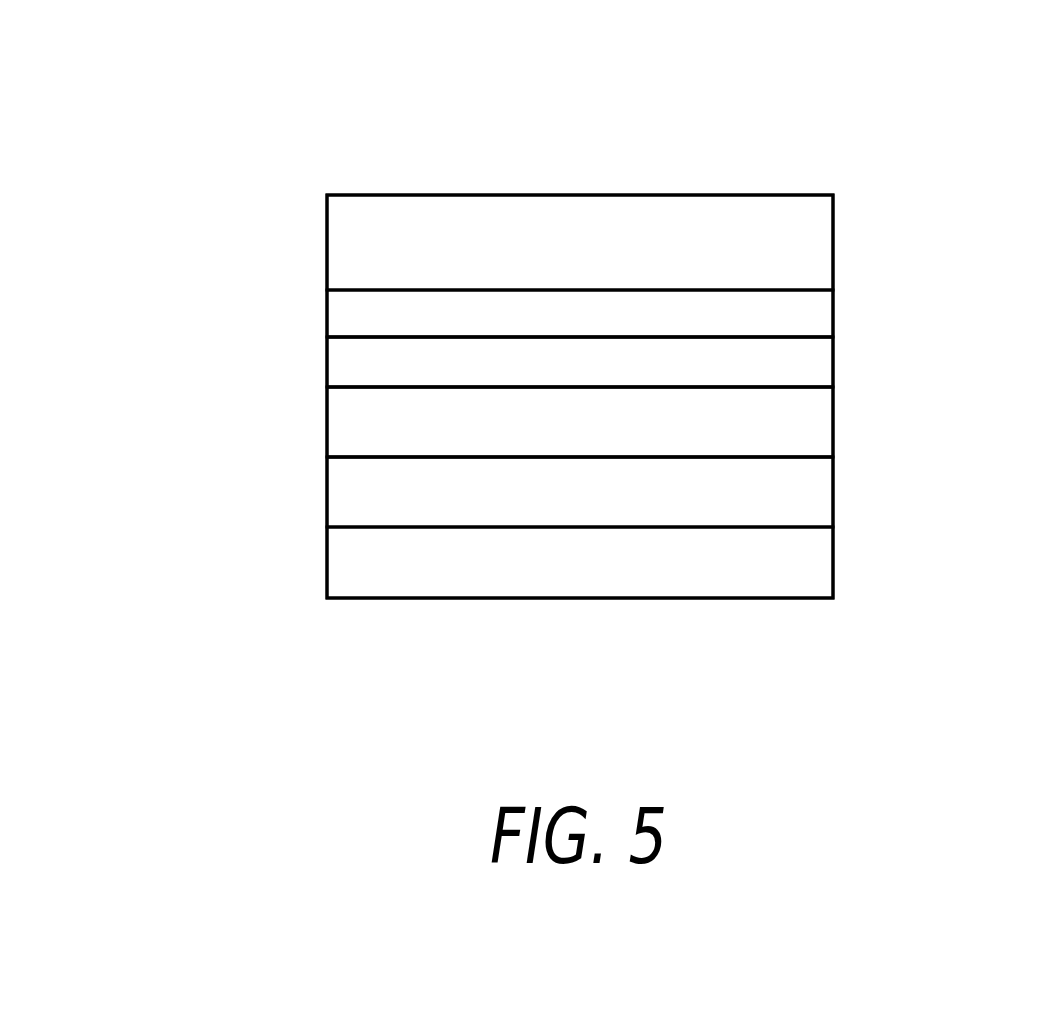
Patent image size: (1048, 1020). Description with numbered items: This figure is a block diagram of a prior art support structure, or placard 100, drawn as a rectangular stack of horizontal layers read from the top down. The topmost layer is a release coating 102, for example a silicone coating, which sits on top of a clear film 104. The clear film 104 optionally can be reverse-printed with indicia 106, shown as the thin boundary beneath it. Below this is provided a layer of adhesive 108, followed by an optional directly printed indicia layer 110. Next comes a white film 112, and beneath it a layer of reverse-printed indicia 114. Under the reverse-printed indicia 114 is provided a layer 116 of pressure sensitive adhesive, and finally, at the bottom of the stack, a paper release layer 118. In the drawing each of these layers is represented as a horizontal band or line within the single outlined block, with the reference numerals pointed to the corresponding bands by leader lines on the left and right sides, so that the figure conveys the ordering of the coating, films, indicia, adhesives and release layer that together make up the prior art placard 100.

The placard 100 is at (252, 151).
The release coating 102 is at (747, 195).
The clear film 104 is at (327, 310).
The indicia 106 is at (795, 338).
The layer of adhesive 108 is at (327, 367).
The directly printed indicia layer 110 is at (790, 387).
The white film 112 is at (833, 427).
The layer of reverse-printed indicia 114 is at (797, 457).
The layer of pressure sensitive adhesive 116 is at (327, 490).
The paper release layer 118 is at (833, 577).